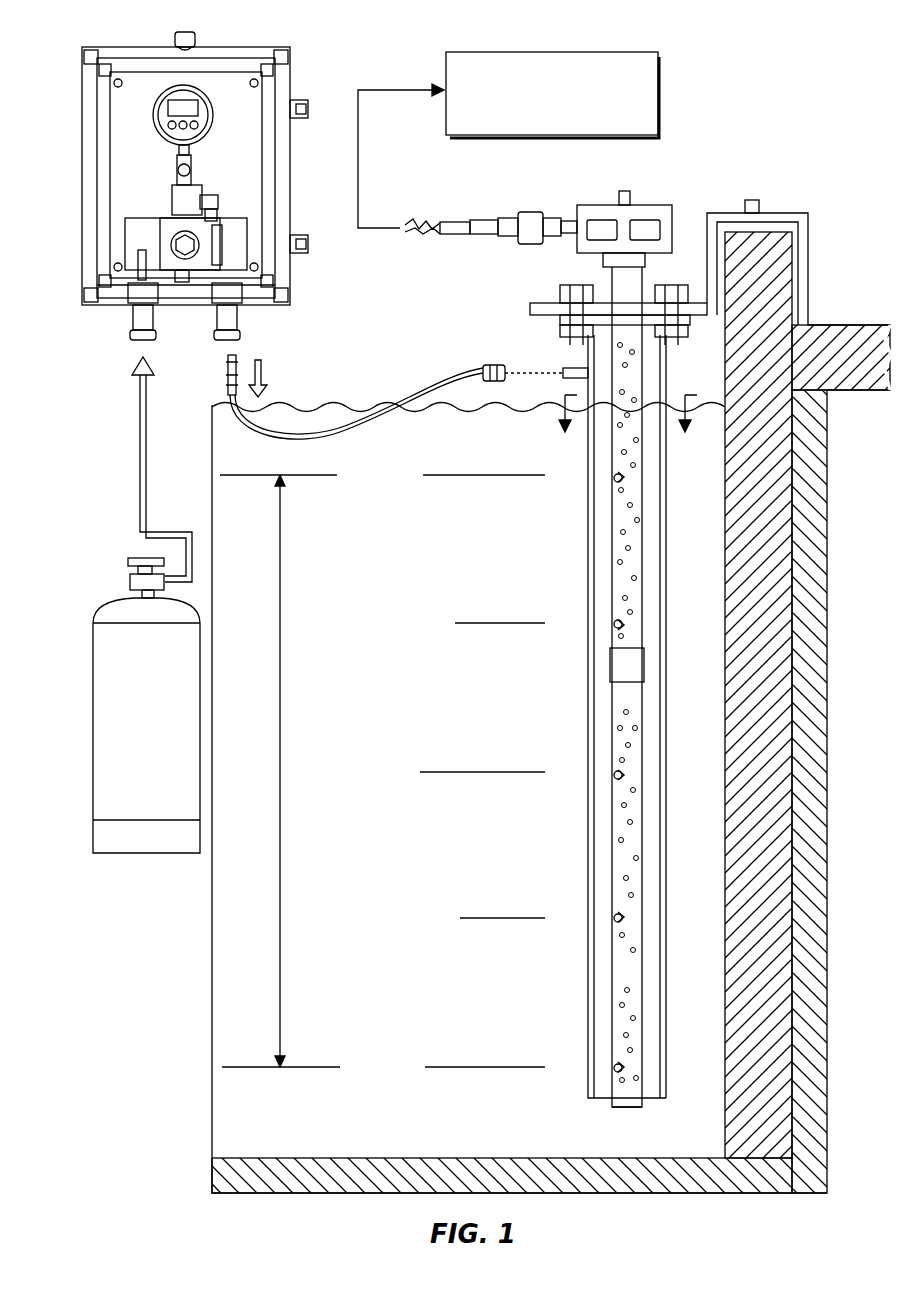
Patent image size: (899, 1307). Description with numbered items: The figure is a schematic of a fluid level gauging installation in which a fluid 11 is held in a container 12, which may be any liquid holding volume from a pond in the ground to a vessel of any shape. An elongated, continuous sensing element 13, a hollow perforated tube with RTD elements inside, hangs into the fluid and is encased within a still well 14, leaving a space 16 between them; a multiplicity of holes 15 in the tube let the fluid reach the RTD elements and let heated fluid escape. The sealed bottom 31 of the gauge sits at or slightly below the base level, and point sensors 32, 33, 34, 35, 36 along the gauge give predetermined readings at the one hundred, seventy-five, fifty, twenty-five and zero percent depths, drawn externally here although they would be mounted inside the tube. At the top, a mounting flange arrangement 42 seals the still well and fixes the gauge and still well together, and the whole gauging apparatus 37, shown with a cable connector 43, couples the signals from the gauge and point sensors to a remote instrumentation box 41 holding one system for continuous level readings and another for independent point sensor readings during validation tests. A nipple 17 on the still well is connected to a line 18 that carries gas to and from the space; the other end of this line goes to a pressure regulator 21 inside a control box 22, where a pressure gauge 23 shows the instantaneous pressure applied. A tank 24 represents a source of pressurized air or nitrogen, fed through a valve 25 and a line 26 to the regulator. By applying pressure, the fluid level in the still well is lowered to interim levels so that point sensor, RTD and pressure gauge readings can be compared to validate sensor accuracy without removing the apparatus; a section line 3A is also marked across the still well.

The fluid 11 is at (352, 563).
The container 12 is at (795, 545).
The sensing element 13 is at (645, 580).
The still well 14 is at (590, 548).
The holes 15 is at (628, 522).
The space 16 is at (655, 725).
The nipple 17 is at (570, 365).
The line 18 is at (425, 395).
The pressure regulator 21 is at (243, 200).
The control box 22 is at (152, 47).
The pressure gauge 23 is at (152, 113).
The tank 24 is at (93, 672).
The valve 25 is at (130, 565).
The line 26 is at (140, 455).
The bottom 31 is at (628, 1110).
The point sensor 32 is at (614, 480).
The point sensor 33 is at (614, 625).
The point sensor 34 is at (614, 777).
The point sensor 35 is at (614, 920).
The point sensor 36 is at (614, 1070).
The gauging apparatus 37 is at (662, 178).
The remote instrumentation box 41 is at (583, 52).
The top mounting flange arrangement 42 is at (545, 275).
The cable connector 43 is at (592, 205).
The section line 3A- 3A is at (624, 430).